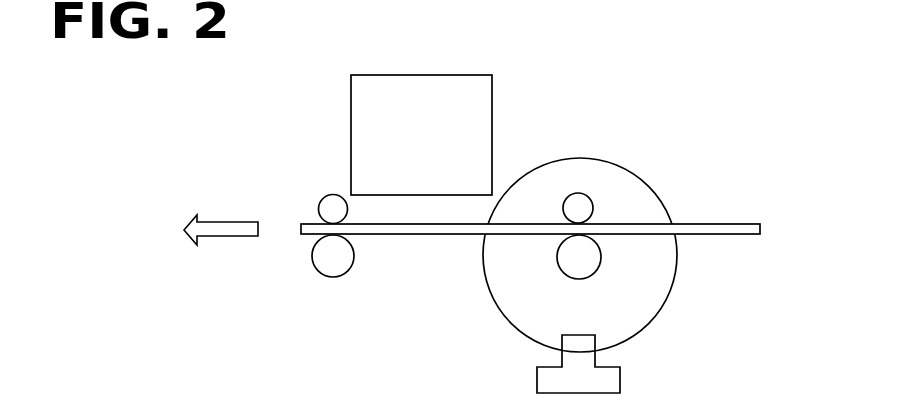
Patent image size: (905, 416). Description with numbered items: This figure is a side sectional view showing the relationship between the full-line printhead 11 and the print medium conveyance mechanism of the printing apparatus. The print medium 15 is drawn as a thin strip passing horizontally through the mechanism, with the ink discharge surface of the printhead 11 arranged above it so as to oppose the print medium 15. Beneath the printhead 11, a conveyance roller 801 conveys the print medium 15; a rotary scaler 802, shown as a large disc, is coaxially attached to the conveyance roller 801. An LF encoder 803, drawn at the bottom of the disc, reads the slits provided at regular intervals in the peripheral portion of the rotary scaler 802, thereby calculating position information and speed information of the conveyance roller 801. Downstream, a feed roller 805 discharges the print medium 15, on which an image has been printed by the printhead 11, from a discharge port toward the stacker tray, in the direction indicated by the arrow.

The printhead 11 is at (416, 75).
The print medium 15 is at (734, 224).
The conveyance roller 801 is at (557, 257).
The rotary scaler 802 is at (668, 300).
The LF encoder 803 is at (620, 380).
The feed roller 805 is at (332, 278).